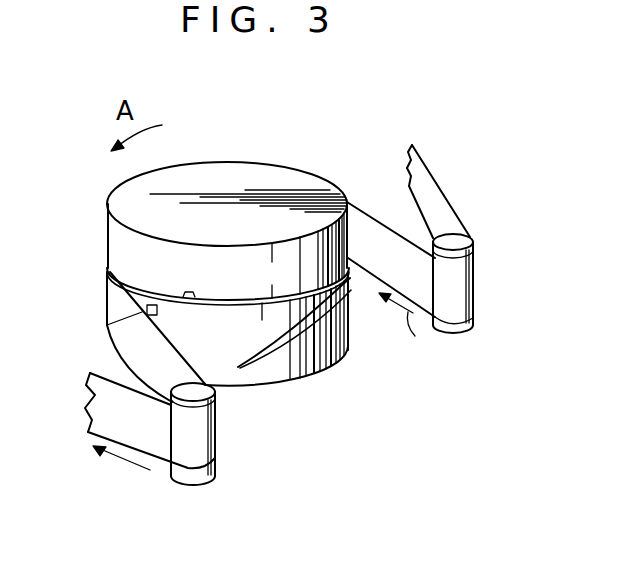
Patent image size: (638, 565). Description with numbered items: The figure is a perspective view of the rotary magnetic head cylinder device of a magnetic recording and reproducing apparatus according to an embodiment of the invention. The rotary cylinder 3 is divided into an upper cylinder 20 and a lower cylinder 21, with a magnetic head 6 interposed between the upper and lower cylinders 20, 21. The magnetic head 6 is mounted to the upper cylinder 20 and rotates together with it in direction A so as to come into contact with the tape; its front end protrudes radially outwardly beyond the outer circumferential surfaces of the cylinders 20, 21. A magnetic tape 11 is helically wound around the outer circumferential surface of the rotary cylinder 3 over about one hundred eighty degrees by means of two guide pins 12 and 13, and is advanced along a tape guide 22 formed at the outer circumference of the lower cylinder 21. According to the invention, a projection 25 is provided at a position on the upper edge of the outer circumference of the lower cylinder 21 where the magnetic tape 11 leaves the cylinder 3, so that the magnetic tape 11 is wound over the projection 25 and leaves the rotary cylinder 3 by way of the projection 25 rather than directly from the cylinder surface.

The rotary cylinder 3 is at (186, 162).
The upper cylinder 20 is at (299, 182).
The magnetic head 6 is at (188, 293).
The projection 25 is at (107, 328).
The guide pin 13 is at (210, 392).
The tape guide 22 is at (303, 340).
The lower cylinder 21 is at (350, 313).
The guide pin 12 is at (467, 243).
The magnetic tape 11 is at (443, 198).